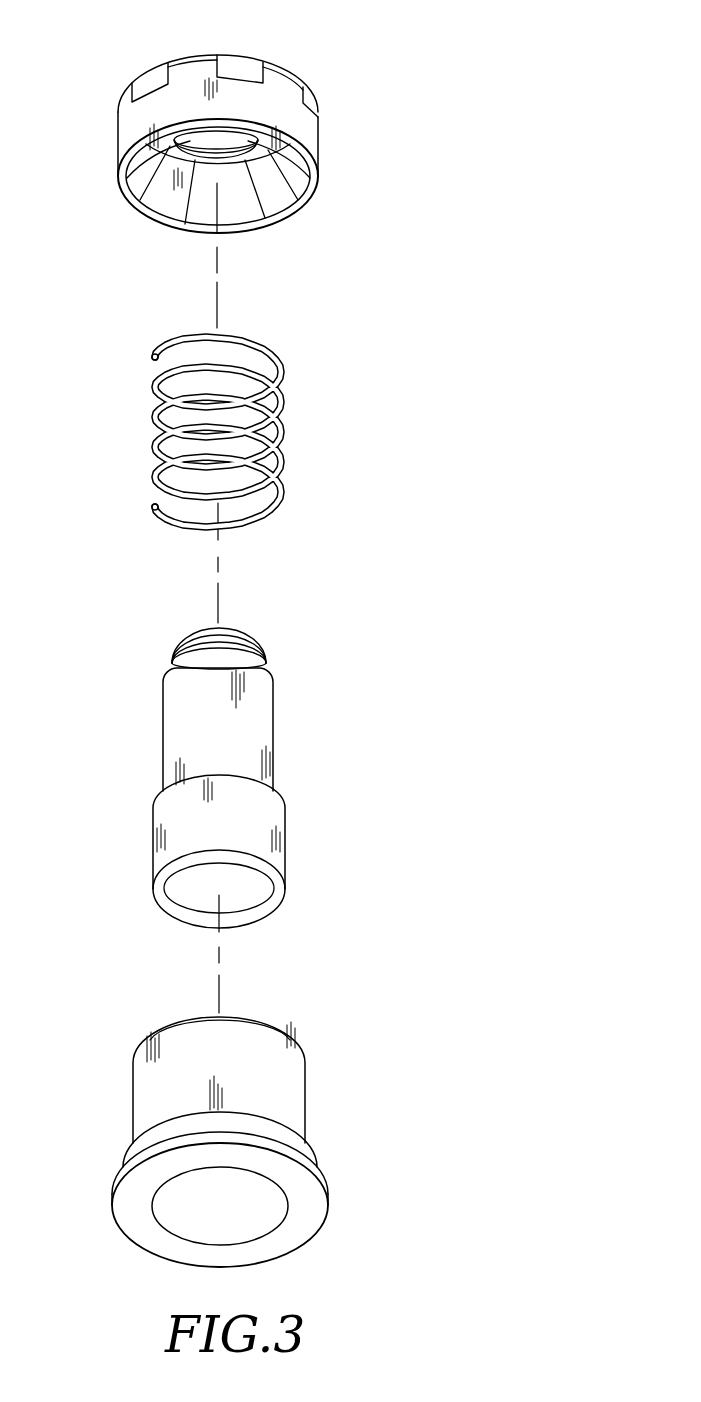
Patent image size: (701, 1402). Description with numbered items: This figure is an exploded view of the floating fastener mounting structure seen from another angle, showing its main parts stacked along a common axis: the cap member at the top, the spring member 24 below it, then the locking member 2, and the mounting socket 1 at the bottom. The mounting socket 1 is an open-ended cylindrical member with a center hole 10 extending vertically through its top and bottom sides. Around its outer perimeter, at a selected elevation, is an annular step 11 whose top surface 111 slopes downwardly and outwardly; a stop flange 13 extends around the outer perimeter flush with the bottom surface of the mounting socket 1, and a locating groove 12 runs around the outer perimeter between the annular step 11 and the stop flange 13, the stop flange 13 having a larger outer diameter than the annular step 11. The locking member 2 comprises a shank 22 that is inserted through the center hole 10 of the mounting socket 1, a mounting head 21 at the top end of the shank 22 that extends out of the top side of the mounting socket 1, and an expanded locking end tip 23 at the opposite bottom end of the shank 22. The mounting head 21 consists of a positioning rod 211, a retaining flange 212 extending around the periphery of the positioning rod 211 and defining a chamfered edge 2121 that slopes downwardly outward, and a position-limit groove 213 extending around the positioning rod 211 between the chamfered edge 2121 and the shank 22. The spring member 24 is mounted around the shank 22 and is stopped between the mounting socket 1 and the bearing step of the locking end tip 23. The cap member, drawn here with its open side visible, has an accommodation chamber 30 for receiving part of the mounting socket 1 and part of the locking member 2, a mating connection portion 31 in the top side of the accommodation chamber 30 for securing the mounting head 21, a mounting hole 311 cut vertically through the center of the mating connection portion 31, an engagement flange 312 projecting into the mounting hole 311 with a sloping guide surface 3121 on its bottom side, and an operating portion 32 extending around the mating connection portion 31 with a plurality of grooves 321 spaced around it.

The mounting socket 1 is at (221, 1142).
The center hole 10 is at (168, 1226).
The annular step 11 is at (133, 1153).
The downwardly and outwardly sloping top surface 111 is at (182, 1116).
The locating groove 12 is at (217, 1145).
The stop flange 13 is at (310, 1167).
The locking member 2 is at (274, 751).
The mounting head 21 is at (274, 622).
The positioning rod 211 is at (232, 628).
The chamfered edge 2121 is at (243, 640).
The retaining flange 212 is at (260, 649).
The position-limit groove 213 is at (200, 650).
The shank 22 is at (262, 720).
The expanded locking end tip 23 is at (272, 830).
The spring member 24 is at (278, 386).
The accommodation chamber 30 is at (220, 159).
The mating connection portion 31 is at (161, 167).
The mounting hole 311 is at (161, 172).
The engagement flange 312 is at (251, 187).
The sloping guide surface 3121 is at (275, 196).
The operating portion 32 is at (237, 76).
The grooves 321 is at (245, 63).